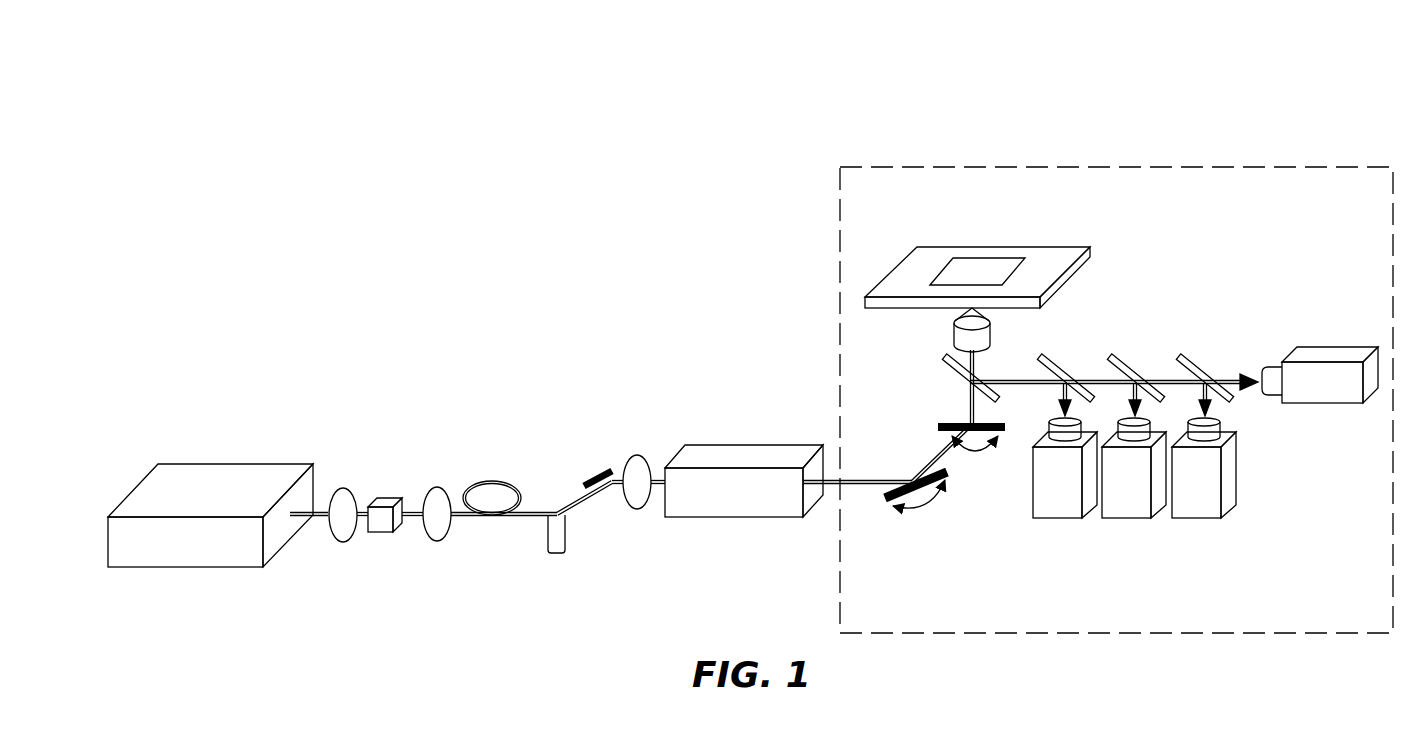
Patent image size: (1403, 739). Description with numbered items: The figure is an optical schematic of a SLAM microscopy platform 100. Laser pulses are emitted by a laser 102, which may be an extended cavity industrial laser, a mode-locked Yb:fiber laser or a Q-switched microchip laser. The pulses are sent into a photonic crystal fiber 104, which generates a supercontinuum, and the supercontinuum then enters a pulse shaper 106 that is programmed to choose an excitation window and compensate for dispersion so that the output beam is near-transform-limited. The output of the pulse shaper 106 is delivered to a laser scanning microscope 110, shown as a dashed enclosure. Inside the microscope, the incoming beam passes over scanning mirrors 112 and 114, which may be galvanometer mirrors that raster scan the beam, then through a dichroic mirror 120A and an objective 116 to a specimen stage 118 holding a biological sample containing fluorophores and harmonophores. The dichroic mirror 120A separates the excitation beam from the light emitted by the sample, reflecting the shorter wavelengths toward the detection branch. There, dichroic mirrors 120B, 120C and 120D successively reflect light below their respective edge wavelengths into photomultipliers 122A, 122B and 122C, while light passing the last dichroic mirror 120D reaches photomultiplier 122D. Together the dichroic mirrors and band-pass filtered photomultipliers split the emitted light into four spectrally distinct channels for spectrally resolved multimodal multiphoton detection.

The SLAM microscopy platform 100 is at (1215, 106).
The laser 102 is at (170, 553).
The photonic crystal fiber 104 is at (492, 480).
The pulse shaper 106 is at (715, 509).
The laser scanning microscope 110 is at (1322, 208).
The scanning mirror 112 is at (887, 500).
The scanning mirror 114 is at (953, 423).
The objective 116 is at (950, 322).
The specimen stage 118 is at (1005, 246).
The dichroic mirror 120A is at (957, 373).
The dichroic mirror 120B is at (1070, 370).
The dichroic mirror 120C is at (1135, 367).
The dichroic mirror 120D is at (1205, 368).
The photomultiplier 122A is at (1052, 522).
The photomultiplier 122B is at (1128, 520).
The photomultiplier 122C is at (1198, 520).
The photomultiplier 122D is at (1354, 394).